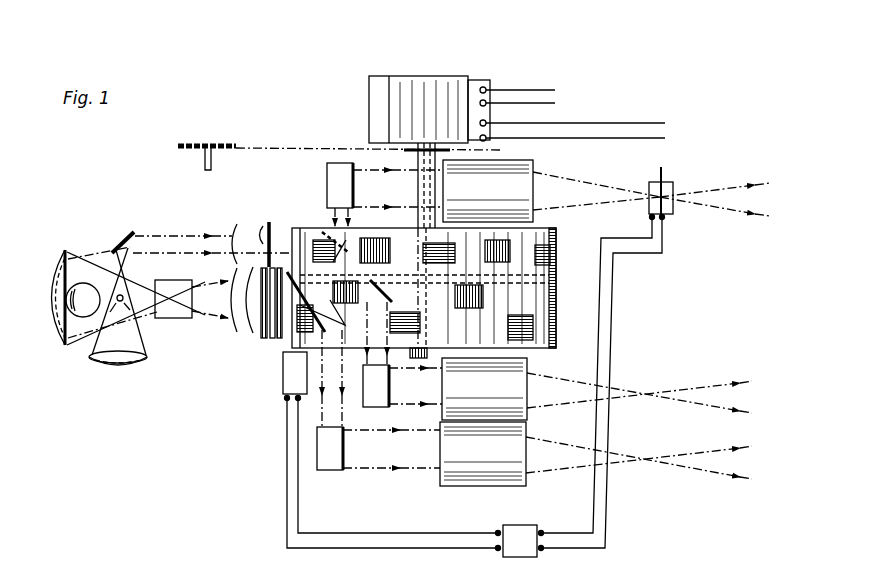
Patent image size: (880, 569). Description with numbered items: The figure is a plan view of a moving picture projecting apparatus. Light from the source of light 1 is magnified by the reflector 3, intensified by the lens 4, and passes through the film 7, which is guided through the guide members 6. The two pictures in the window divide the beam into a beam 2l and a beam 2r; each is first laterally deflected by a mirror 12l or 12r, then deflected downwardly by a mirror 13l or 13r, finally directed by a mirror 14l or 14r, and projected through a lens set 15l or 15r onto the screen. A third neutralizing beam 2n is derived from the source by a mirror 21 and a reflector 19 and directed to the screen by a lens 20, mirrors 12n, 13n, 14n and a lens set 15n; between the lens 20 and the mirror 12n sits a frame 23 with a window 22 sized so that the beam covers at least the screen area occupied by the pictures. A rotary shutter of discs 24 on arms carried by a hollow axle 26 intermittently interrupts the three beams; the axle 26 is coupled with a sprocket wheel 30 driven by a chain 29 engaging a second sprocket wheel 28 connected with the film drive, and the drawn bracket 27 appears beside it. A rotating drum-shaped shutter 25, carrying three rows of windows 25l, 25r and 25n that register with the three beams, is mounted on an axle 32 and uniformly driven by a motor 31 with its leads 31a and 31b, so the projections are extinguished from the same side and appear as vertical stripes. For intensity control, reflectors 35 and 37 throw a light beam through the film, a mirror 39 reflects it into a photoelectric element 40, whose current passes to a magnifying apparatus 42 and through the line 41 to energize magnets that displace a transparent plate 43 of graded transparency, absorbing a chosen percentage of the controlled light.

The source of light 1 is at (124, 297).
The left beam 2l is at (711, 393).
The neutralizing beam 2n is at (744, 214).
The right beam 2r is at (722, 478).
The reflector 3 is at (54, 297).
The lens 4 is at (232, 326).
The guide members 6 is at (279, 342).
The film 7 is at (271, 340).
The left lateral deflecting mirror 12l is at (390, 289).
The neutralizing-beam mirror 12n is at (318, 228).
The right lateral deflecting mirror 12r is at (334, 334).
The left downward deflecting mirror 13l is at (386, 387).
The neutralizing-beam mirror 13n is at (327, 187).
The right downward deflecting mirror 13r is at (340, 451).
The left final directing mirror 14l is at (384, 390).
The neutralizing-beam mirror 14n is at (330, 192).
The right final directing mirror 14r is at (338, 453).
The left lens set 15l is at (484, 389).
The neutralizing-beam lens set 15n is at (488, 191).
The right lens set 15r is at (483, 454).
The reflector 19 is at (114, 364).
The lens 20 is at (236, 227).
The mirror 21 is at (118, 246).
The window 22 is at (263, 227).
The frame 23 is at (283, 222).
The shutter discs 24 is at (557, 242).
The drum-shaped shutter 25 is at (423, 293).
The left row of windows 25l is at (547, 292).
The neutralizing row of windows 25n is at (551, 258).
The right row of windows 25r is at (534, 328).
The hollow axle 26 is at (418, 190).
The bracket 27 is at (206, 167).
The second sprocket wheel 28 is at (183, 149).
The chain 29 is at (284, 148).
The sprocket wheel 30 is at (472, 150).
The motor 31 is at (429, 109).
The control leads 31a is at (538, 89).
The control leads 31b is at (592, 127).
The axle 32 is at (428, 249).
The reflector 35 is at (83, 300).
The reflector 37 is at (147, 298).
The mirror 39 is at (263, 340).
The photoelectric element 40 is at (295, 376).
The line 41 is at (411, 532).
The magnifying apparatus 42 is at (520, 541).
The movable transparent plate 43 is at (665, 175).